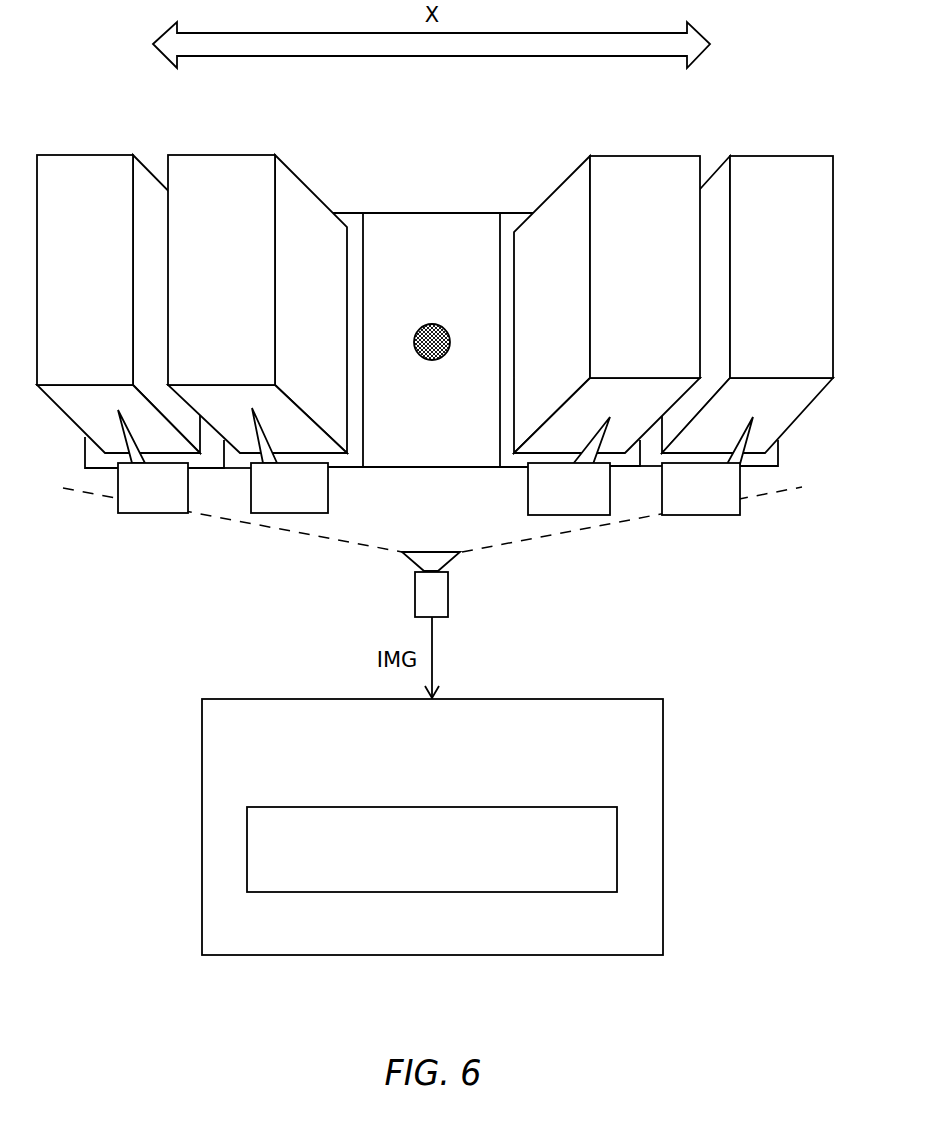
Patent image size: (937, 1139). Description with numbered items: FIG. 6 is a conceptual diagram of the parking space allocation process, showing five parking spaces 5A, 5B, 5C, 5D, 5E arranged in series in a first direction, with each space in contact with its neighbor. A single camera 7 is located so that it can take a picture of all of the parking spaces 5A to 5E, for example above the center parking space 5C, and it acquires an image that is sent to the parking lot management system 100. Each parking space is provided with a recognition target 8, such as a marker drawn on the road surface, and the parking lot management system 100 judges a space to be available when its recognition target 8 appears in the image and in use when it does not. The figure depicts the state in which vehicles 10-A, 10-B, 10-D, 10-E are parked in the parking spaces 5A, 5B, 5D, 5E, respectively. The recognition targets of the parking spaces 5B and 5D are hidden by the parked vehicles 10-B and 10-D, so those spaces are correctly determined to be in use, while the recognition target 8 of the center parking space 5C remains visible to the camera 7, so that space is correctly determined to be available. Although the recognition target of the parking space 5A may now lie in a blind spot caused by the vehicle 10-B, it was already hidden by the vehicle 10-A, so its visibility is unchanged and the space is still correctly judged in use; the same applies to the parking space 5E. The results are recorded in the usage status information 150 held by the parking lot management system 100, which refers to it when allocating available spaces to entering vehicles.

The parking space 5A is at (148, 174).
The parking space 5B is at (355, 213).
The center parking space 5C is at (432, 213).
The parking space 5D is at (516, 213).
The parking space 5E is at (712, 176).
The recognition target 8 is at (432, 362).
The vehicle 10-A is at (153, 461).
The vehicle 10-B is at (289, 460).
The vehicle 10-D is at (569, 466).
The vehicle 10-E is at (707, 466).
The camera 7 is at (415, 593).
The parking lot management system 100 is at (247, 699).
The usage status information 150 is at (294, 807).